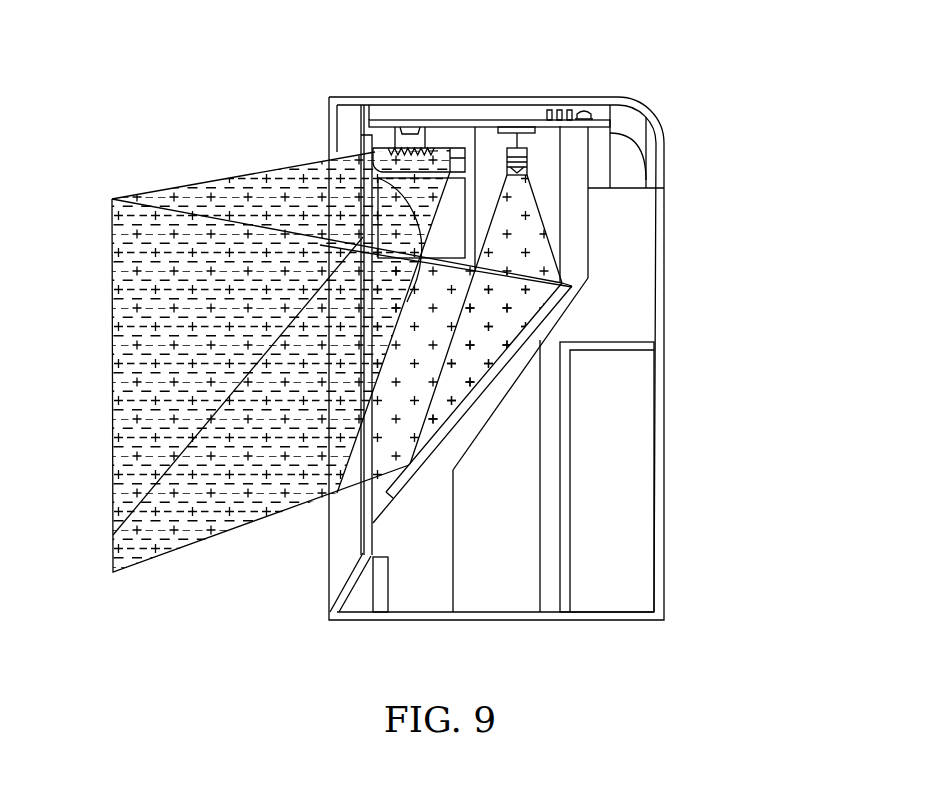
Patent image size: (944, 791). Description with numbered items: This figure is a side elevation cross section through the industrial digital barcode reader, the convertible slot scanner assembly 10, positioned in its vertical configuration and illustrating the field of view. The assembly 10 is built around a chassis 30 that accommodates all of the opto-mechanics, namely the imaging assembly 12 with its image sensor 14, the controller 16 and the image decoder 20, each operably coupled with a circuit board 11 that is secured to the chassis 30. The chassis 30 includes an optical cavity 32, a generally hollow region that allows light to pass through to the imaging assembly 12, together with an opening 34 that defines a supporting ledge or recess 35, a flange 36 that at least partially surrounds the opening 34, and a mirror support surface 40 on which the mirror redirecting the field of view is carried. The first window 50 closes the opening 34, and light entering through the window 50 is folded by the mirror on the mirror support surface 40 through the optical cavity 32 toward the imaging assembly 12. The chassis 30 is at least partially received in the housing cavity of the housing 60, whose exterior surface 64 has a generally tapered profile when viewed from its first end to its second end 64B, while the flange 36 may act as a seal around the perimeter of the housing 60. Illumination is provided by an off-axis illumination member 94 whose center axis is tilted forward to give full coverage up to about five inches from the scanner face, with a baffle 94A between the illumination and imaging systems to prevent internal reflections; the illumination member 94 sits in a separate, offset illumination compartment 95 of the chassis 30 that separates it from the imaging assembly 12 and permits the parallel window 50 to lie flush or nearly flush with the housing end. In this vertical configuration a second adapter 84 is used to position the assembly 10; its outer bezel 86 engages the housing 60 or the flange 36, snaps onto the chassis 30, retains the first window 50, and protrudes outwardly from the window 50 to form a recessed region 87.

The convertible slot scanner assembly 10 is at (722, 545).
The circuit board 11 is at (515, 127).
The imaging assembly 12 is at (533, 126).
The image sensor 14 is at (505, 160).
The controller 16 is at (408, 121).
The image decoder 20 is at (502, 125).
The chassis 30 is at (388, 540).
The optical cavity 32 is at (407, 413).
The opening 34 is at (367, 553).
The supporting ledge or recess 35 is at (363, 520).
The flange 36 is at (362, 603).
The mirror support surface 40 is at (528, 331).
The first window 50 is at (372, 382).
The housing 60 is at (652, 470).
The exterior surface 64 is at (603, 97).
The second end 64B is at (686, 213).
The second adapter 84 is at (362, 161).
The outer bezel 86 is at (340, 151).
The recessed region 87 is at (326, 565).
The illumination member 94 is at (375, 150).
The baffle 94A is at (420, 258).
The illumination compartment 95 is at (424, 220).